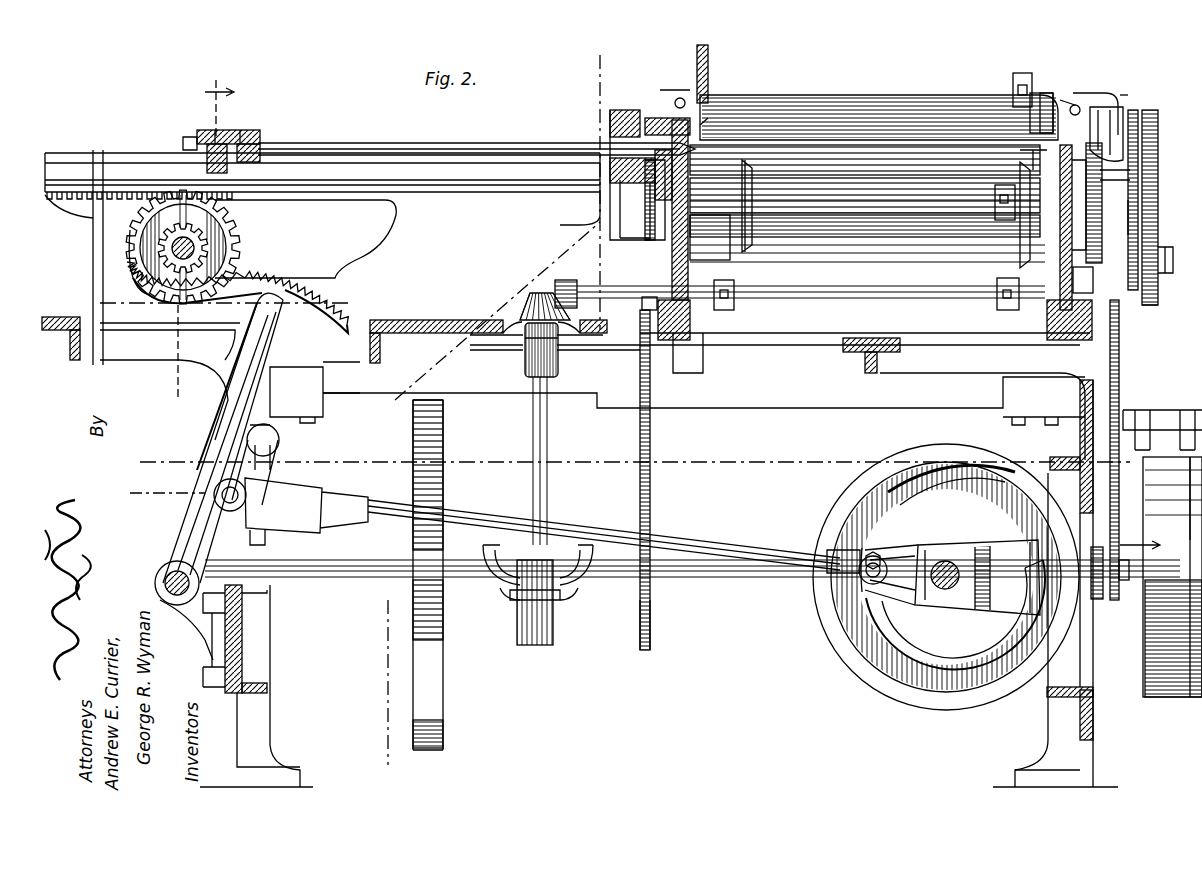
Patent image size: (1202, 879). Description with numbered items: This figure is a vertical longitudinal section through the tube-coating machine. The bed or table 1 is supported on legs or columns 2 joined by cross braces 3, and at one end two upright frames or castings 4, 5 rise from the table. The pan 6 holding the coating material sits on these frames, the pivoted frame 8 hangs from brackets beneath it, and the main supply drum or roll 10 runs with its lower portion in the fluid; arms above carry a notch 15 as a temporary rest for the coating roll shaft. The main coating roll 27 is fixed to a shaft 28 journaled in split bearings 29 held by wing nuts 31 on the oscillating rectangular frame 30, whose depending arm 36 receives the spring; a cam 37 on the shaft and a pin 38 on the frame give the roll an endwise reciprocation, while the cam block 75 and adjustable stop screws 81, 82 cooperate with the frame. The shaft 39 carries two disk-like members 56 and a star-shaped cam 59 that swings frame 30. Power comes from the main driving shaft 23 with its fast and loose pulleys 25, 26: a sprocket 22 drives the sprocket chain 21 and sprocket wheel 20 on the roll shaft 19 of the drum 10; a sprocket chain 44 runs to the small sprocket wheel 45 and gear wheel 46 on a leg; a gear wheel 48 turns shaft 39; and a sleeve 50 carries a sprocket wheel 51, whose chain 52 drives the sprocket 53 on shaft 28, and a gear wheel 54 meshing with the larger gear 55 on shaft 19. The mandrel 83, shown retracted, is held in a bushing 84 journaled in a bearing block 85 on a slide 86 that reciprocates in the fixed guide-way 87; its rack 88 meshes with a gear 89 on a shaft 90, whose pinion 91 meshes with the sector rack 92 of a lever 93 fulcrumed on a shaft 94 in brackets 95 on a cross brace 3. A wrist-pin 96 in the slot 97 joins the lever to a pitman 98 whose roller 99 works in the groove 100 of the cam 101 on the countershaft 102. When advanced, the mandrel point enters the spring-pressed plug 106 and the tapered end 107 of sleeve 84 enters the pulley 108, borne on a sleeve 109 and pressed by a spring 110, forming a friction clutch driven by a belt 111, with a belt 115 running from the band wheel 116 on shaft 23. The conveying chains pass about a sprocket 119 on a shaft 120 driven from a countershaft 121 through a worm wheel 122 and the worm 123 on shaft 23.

The bed or table 1 is at (425, 322).
The legs or columns 2 is at (1088, 665).
The cross braces 3 is at (262, 640).
The vertically-disposed frame or casting 4 is at (694, 118).
The vertically-disposed frame or casting 5 is at (1095, 326).
The pan 6 is at (865, 187).
The frame 8 is at (202, 239).
The main supply drum or roll 10 is at (848, 165).
The notch 15 is at (638, 520).
The roll shaft 19 is at (1120, 180).
The sprocket wheel 20 is at (800, 150).
The sprocket chain 21 is at (652, 380).
The sprocket 22 is at (650, 630).
The main driving shaft 23 is at (355, 562).
The fast belt pulley 25 is at (1162, 553).
The loose belt pulley 26 is at (1195, 518).
The main coating roll 27 is at (880, 105).
The shaft 28 is at (1050, 92).
The split bearings 29 is at (1088, 105).
The frame 30 is at (790, 100).
The wing nuts 31 is at (690, 90).
The depending arm 36 is at (1090, 280).
The cam 37 is at (1120, 110).
The pin 38 is at (1110, 115).
The shaft 39 is at (880, 195).
The sprocket chain 44 is at (1121, 355).
The small sprocket wheel 45 is at (1117, 590).
The pinion or gear wheel 46 is at (1097, 602).
The gear wheel 48 is at (1105, 228).
The sleeve 50 is at (1093, 227).
The sprocket wheel 51 is at (1160, 285).
The chain 52 is at (1135, 228).
The sprocket 53 is at (1135, 125).
The gear wheel 54 is at (1150, 305).
The larger gear 55 is at (1160, 128).
The disk-like members 56 is at (1025, 228).
The star-shaped cam 59 is at (1003, 200).
The cam block 75 is at (1013, 78).
The adjustable stop screw 81 is at (1050, 313).
The adjustable stop screw 82 is at (710, 100).
The mandrel 83 is at (512, 143).
The bushing or sleeve 84 is at (222, 136).
The bearing block 85 is at (238, 134).
The slide 86 is at (123, 172).
The fixed guide-way 87 is at (374, 185).
The rack 88 is at (130, 198).
The gear 89 is at (238, 248).
The shaft 90 is at (196, 243).
The pinion 91 is at (160, 247).
The sector rack 92 is at (305, 290).
The lever 93 is at (222, 410).
The shaft 94 is at (165, 585).
The brackets 95 is at (200, 625).
The wrist-pin 96 is at (270, 498).
The slot 97 is at (280, 438).
The pitman 98 is at (455, 512).
The roller 99 is at (880, 545).
The groove 100 is at (885, 615).
The cam 101 is at (872, 470).
The countershaft 102 is at (952, 568).
The spring-pressed rotatable plug 106 is at (1035, 148).
The tapered end 107 is at (262, 142).
The pulley 108 is at (625, 110).
The sleeve 109 is at (662, 118).
The spring 110 is at (657, 178).
The belt 111 is at (625, 212).
The belt 115 is at (427, 703).
The band wheel 116 is at (447, 440).
The sprocket 119 is at (730, 310).
The shaft 120 is at (612, 287).
The countershaft 121 is at (546, 422).
The worm wheel 122 is at (520, 600).
The worm 123 is at (565, 548).